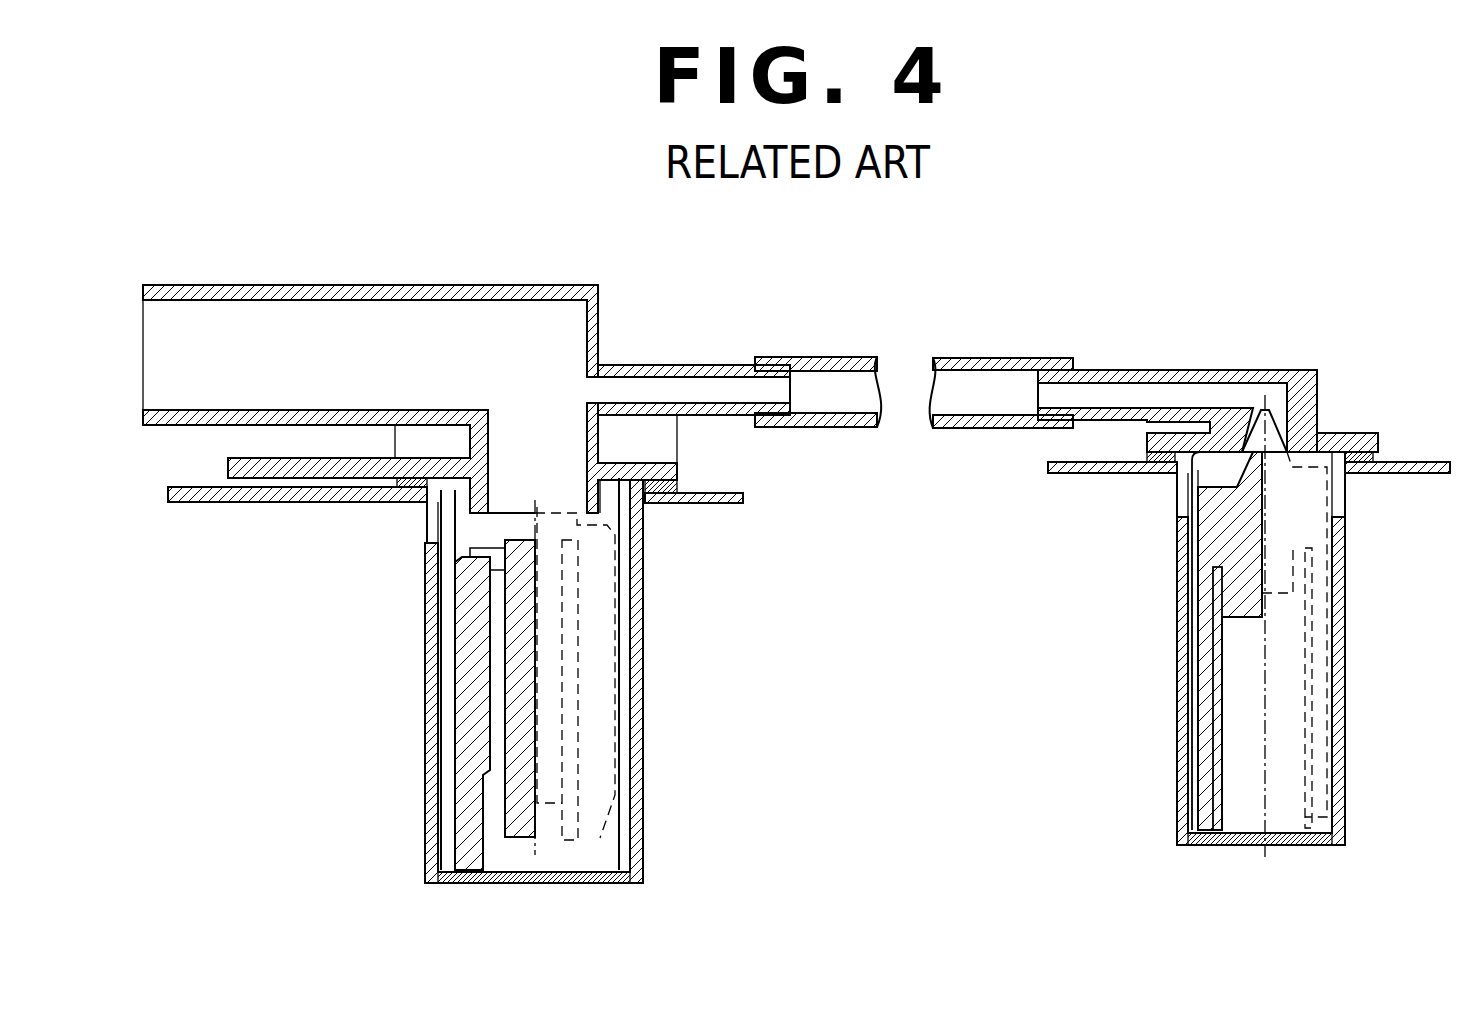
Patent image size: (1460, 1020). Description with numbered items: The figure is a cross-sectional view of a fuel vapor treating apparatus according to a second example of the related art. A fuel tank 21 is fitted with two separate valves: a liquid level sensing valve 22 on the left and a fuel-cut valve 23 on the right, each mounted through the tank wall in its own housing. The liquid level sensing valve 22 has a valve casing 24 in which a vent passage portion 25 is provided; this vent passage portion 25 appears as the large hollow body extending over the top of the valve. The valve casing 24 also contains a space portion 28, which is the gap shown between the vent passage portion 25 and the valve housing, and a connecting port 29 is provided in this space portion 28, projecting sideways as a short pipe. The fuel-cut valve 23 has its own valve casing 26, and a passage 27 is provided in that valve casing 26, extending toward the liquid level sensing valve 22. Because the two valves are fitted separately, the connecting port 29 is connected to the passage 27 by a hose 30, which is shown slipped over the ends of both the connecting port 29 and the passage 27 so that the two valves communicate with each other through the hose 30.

The fuel tank 21 is at (340, 500).
The liquid level sensing valve 22 is at (440, 680).
The fuel-cut valve 23 is at (1172, 626).
The valve casing 24 is at (425, 562).
The vent passage portion 25 is at (275, 285).
The valve casing 26 is at (1180, 598).
The passage 27 is at (1143, 372).
The space portion 28 is at (563, 400).
The connecting port 29 is at (675, 370).
The hose 30 is at (823, 357).